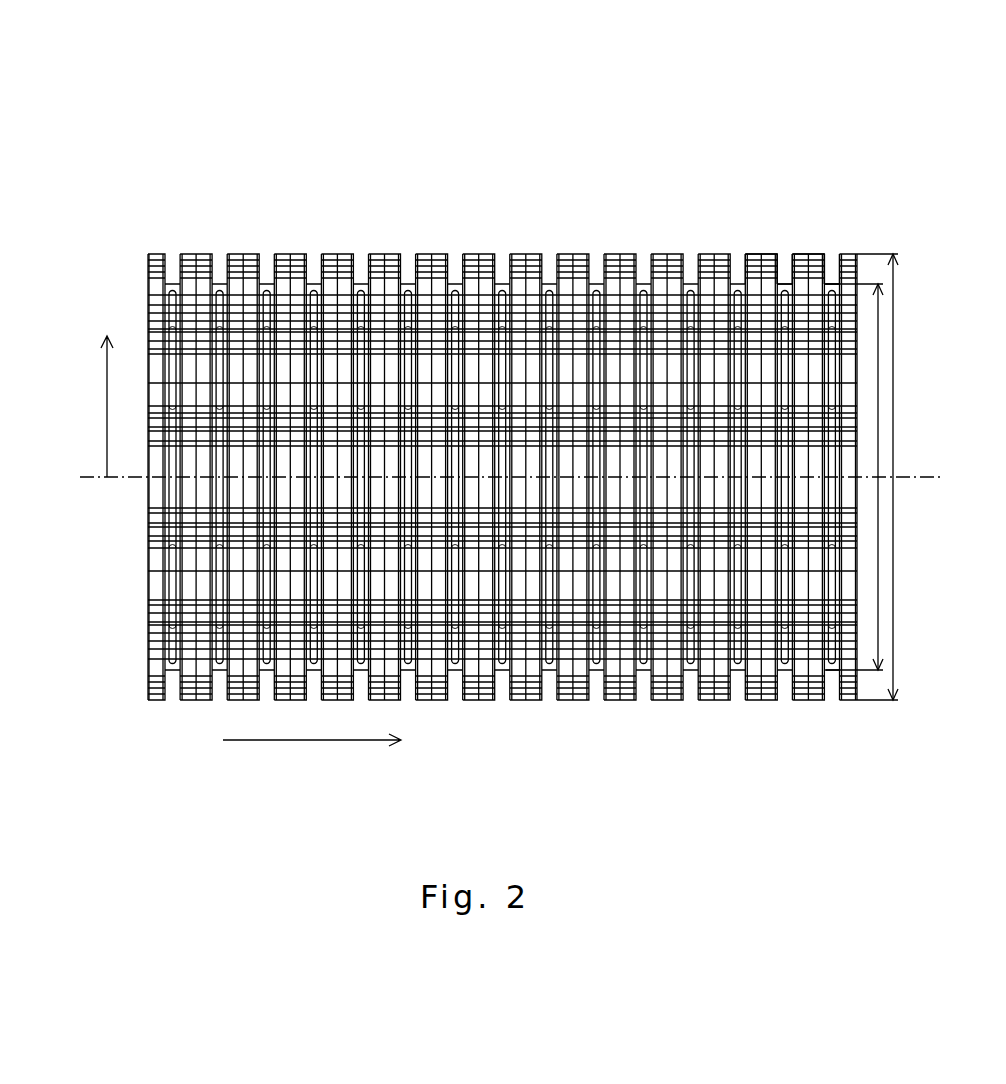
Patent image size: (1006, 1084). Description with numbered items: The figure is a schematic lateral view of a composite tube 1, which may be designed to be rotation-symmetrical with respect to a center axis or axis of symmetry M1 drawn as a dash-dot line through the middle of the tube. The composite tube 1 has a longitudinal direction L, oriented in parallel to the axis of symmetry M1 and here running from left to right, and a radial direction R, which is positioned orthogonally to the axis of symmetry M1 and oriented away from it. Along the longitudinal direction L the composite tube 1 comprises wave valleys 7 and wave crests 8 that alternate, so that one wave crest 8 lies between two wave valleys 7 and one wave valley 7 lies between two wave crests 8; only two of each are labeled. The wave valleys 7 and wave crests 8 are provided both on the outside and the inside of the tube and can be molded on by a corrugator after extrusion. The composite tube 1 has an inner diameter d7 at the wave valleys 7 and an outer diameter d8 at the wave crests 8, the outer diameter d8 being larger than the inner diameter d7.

The composite tube 1 is at (527, 181).
The wave valleys 7 is at (787, 268).
The wave crests 8 is at (765, 254).
The axis of symmetry M1 is at (915, 476).
The inner diameter d7 is at (878, 505).
The outer diameter d8 is at (878, 477).
The radial direction R is at (98, 406).
The longitudinal direction L is at (312, 756).